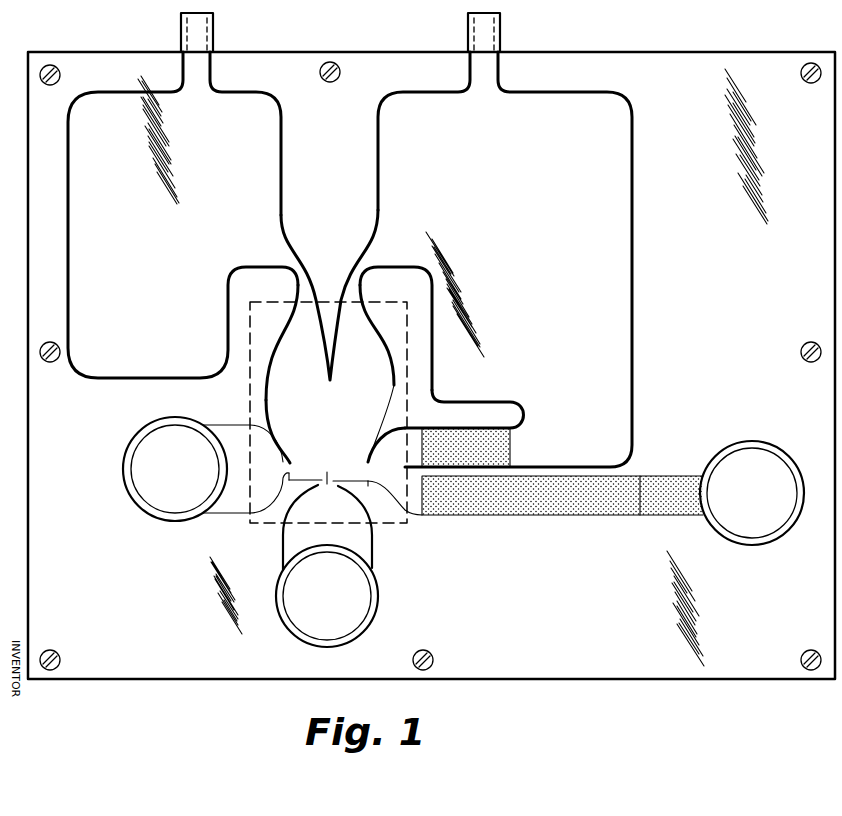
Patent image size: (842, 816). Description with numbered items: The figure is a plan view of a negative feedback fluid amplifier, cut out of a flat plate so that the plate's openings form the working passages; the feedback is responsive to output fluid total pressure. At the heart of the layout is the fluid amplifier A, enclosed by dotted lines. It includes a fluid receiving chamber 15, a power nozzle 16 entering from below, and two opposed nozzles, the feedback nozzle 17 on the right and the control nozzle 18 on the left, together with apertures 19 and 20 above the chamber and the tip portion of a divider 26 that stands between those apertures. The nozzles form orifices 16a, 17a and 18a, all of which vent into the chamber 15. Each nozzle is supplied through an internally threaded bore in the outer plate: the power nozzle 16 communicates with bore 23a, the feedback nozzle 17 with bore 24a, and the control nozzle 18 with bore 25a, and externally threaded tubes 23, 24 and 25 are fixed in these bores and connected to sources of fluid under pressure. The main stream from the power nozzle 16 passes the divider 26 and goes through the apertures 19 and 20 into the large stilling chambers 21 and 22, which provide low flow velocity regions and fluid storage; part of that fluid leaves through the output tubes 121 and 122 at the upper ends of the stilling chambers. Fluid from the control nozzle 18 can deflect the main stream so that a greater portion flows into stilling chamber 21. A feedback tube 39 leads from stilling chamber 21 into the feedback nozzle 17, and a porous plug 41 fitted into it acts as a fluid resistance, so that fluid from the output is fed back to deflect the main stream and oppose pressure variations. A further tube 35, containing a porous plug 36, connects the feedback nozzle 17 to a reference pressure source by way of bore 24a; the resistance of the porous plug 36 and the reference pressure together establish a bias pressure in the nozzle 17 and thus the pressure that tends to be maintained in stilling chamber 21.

The output tube 122 is at (205, 70).
The output tube 121 is at (491, 75).
The stilling chamber 22 is at (183, 202).
The stilling chamber 21 is at (517, 245).
The aperture 20 is at (300, 306).
The aperture 19 is at (359, 306).
The divider 26 is at (333, 354).
The fluid receiving chamber 15 is at (314, 424).
The fluid amplifier A is at (248, 410).
The orifice 18a is at (291, 463).
The orifice 17a is at (369, 462).
The orifice 16a is at (319, 469).
The control nozzle 18 is at (238, 512).
The feedback nozzle 17 is at (415, 512).
The power nozzle 16 is at (345, 492).
The feedback tube 39 is at (480, 432).
The porous plug 41 is at (503, 448).
The tube 35 is at (640, 512).
The porous plug 36 is at (668, 486).
The tube 24 is at (771, 462).
The internally threaded bore 24a is at (768, 534).
The tube 25 is at (192, 503).
The internally threaded bore 25a is at (141, 495).
The tube 23 is at (341, 630).
The internally threaded bore 23a is at (363, 620).